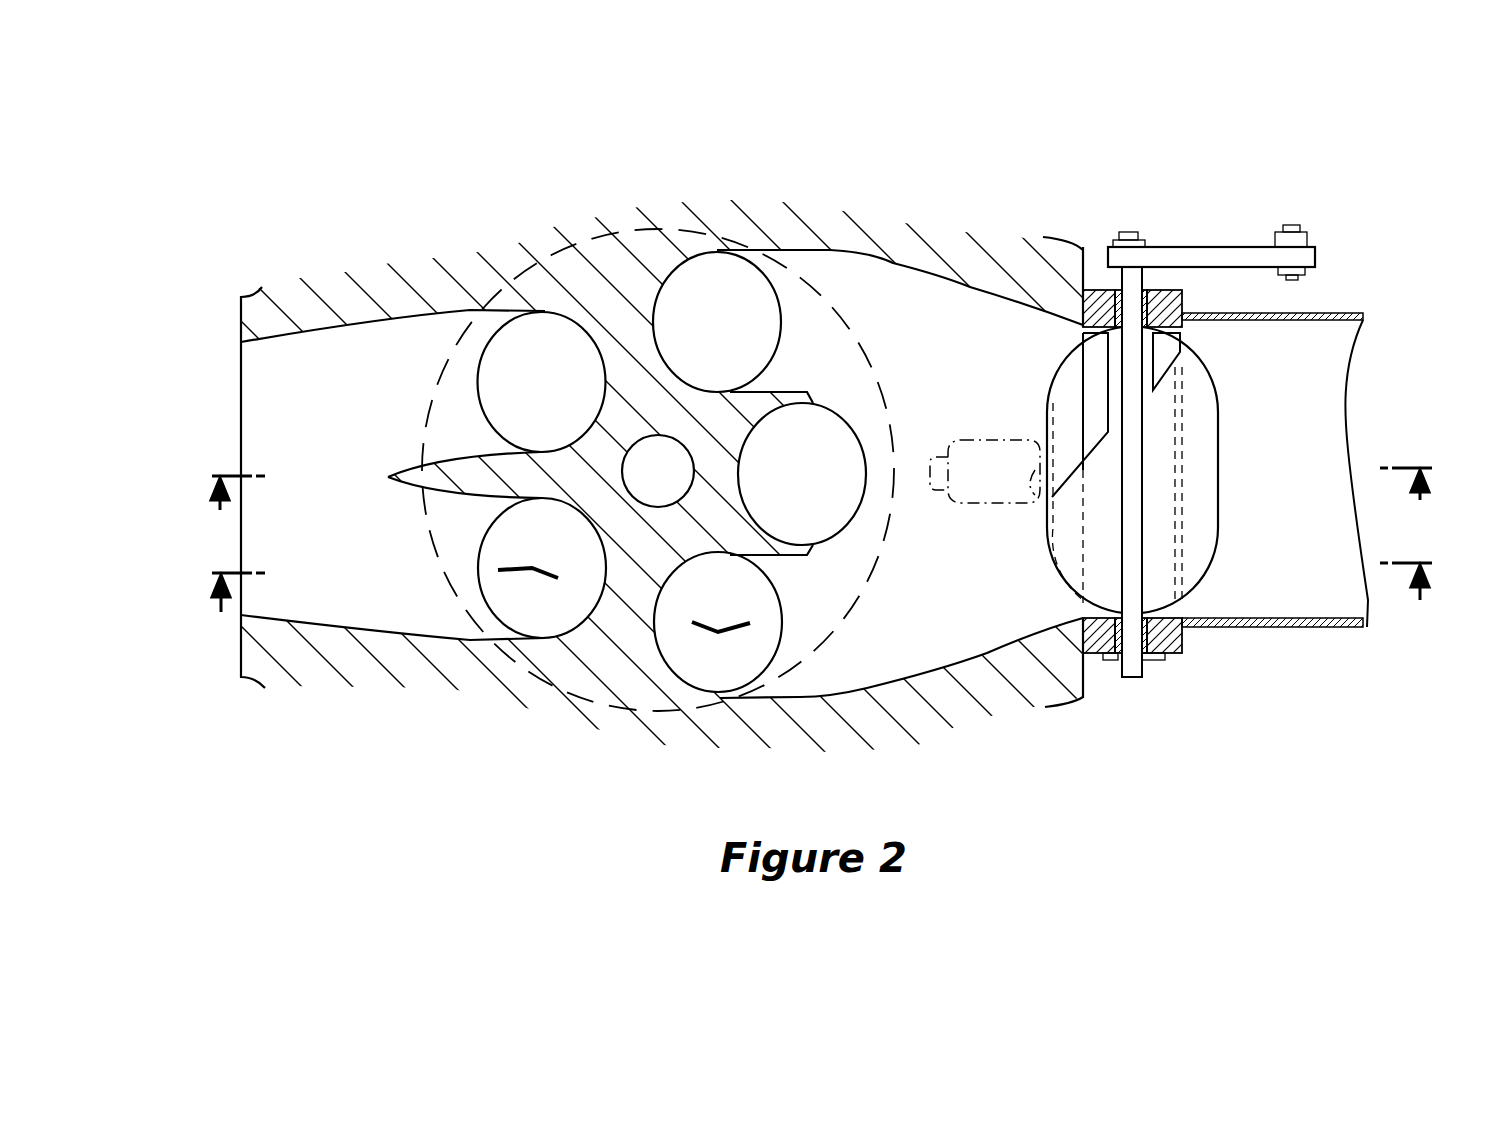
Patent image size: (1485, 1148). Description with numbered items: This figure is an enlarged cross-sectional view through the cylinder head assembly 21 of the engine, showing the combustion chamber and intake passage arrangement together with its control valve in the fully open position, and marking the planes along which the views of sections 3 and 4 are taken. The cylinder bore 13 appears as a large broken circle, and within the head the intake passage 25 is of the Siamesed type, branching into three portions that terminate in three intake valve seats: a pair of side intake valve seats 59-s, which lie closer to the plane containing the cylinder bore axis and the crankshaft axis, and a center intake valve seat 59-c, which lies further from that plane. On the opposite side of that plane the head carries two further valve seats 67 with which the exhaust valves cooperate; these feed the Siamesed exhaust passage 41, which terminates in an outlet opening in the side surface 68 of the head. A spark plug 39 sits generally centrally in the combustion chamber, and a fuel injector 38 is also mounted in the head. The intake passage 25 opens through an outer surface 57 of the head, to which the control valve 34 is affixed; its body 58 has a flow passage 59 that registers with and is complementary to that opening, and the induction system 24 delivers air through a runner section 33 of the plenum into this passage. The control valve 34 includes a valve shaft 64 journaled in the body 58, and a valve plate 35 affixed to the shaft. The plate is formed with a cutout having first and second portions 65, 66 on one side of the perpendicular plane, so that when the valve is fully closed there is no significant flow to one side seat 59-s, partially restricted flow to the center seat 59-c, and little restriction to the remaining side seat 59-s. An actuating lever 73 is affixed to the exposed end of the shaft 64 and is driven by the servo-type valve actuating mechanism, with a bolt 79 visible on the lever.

The cylinder head assembly 21 is at (998, 706).
The side surface 68 is at (241, 316).
The intake valve seats 67 is at (586, 344).
The side intake valve seats 59-s is at (773, 308).
The center intake valve seat 59-c is at (858, 508).
The spark plug 39 is at (670, 488).
The cylinder bore 13 is at (846, 592).
The exhaust passage 41 is at (378, 630).
The fuel injector 38 is at (978, 440).
The control valve 34 is at (1225, 397).
The first cutout portion 65 is at (1057, 405).
The second cutout portion 66 is at (1167, 355).
The valve plate 35 is at (1220, 527).
The valve shaft 64 is at (1143, 580).
The outer surface 57 is at (1087, 685).
The valve body 58 is at (1183, 643).
The flow passage 59 is at (1083, 607).
The actuating lever 73 is at (1208, 245).
The bolt 79 is at (1313, 242).
The induction system 24 is at (1355, 314).
The runner section 33 is at (1313, 628).
The intake passage 25 is at (968, 648).
The section line 3- 3 is at (816, 487).
The section line 4- 4 is at (808, 590).